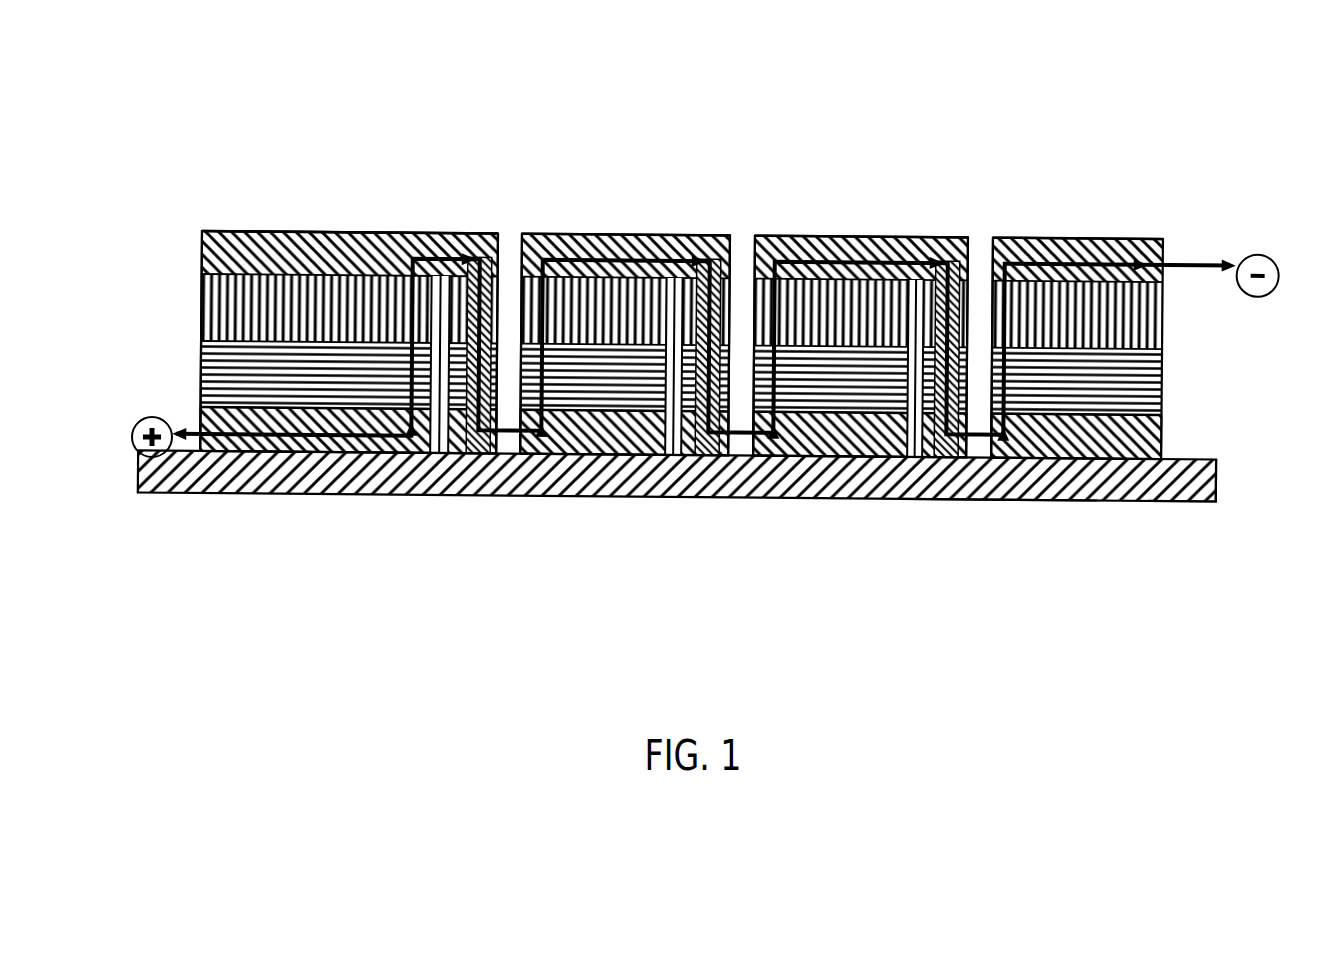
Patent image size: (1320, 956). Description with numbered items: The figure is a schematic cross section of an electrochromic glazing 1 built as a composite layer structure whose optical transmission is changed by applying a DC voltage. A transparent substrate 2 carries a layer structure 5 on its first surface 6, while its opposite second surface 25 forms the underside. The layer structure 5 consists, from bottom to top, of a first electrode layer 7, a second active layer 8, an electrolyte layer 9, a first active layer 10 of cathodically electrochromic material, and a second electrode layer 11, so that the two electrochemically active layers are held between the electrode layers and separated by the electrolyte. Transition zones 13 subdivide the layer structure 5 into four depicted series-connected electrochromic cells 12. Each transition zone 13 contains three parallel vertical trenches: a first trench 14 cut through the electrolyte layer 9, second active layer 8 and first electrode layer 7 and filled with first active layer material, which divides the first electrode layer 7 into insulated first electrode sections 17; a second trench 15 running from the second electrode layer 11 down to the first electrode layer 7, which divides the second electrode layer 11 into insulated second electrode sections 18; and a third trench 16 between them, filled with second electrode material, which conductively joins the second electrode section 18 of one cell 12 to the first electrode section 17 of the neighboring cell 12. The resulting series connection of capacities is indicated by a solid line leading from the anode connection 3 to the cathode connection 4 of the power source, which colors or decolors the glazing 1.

The electrochromic glazing 1 is at (350, 133).
The transparent substrate 2 is at (987, 497).
The anode connection 3 is at (148, 418).
The cathode connection 4 is at (1258, 254).
The layer structure 5 is at (182, 320).
The first surface 6 is at (1200, 458).
The first electrode layer 7 is at (1162, 427).
The second active layer 8 is at (1162, 383).
The electrolyte layer 9 is at (1162, 348).
The first active layer 10 is at (1163, 309).
The second electrode layer 11 is at (1152, 240).
The electrochromic cell 12 is at (266, 214).
The transition zone 13 is at (505, 212).
The first trench 14 is at (436, 450).
The second trench 15 is at (521, 261).
The third trench 16 is at (470, 430).
The first electrode section 17 is at (278, 442).
The second electrode section 18 is at (364, 252).
The second surface 25 is at (1153, 502).